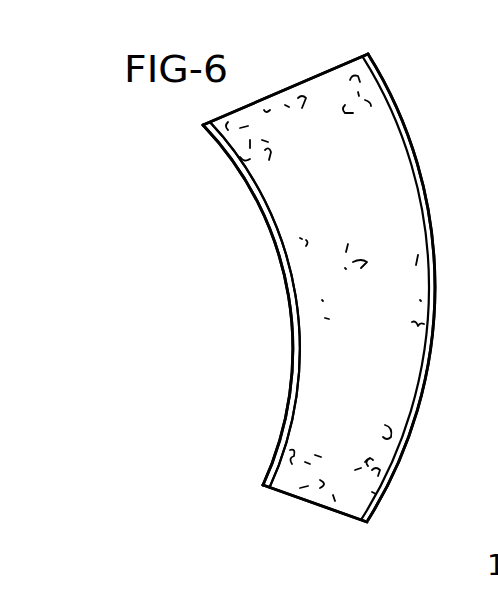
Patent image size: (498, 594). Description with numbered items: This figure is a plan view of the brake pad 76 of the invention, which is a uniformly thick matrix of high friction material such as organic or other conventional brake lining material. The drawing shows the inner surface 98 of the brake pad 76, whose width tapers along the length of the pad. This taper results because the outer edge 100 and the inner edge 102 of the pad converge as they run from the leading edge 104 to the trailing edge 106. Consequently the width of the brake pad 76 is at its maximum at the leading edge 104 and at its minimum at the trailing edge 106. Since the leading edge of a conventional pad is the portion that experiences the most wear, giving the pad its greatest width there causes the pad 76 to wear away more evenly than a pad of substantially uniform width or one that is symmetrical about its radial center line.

The brake pad 76 is at (418, 152).
The inner surface 98 is at (285, 213).
The outer edge 100 is at (436, 294).
The inner edge 102 is at (287, 278).
The leading edge 104 is at (325, 70).
The trailing edge 106 is at (308, 515).